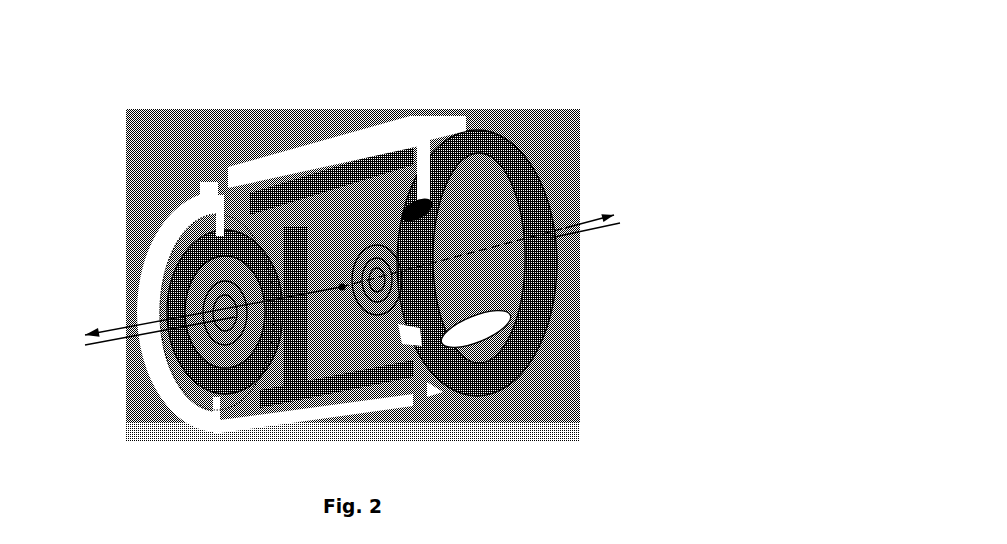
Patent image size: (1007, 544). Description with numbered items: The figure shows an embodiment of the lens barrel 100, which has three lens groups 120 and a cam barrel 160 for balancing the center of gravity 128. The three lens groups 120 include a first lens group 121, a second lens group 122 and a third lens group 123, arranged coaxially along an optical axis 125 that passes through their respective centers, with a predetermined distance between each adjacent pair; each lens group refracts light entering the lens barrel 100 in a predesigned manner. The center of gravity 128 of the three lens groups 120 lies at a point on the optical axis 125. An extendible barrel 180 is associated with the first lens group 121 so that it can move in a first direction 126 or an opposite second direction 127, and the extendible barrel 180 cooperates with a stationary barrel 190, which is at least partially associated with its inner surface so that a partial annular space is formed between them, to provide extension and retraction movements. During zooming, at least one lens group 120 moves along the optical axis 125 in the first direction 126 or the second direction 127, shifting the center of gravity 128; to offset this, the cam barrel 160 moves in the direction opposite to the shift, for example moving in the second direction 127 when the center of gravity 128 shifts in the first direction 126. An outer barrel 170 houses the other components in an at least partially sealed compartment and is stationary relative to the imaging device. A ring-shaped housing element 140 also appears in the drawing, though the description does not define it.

The lens barrel 100 is at (818, 24).
The lens groups 120 is at (383, 293).
The first lens group 121 is at (200, 297).
The second lens group 122 is at (520, 345).
The third lens group 123 is at (467, 233).
The optical axis 125 is at (597, 231).
The first direction 126 is at (113, 326).
The second direction 127 is at (587, 220).
The center of gravity 128 is at (342, 287).
The housing ring 140 is at (497, 158).
The cam barrel 160 is at (355, 392).
The outer barrel 170 is at (420, 122).
The extendible barrel 180 is at (290, 412).
The stationary barrel 190 is at (258, 208).